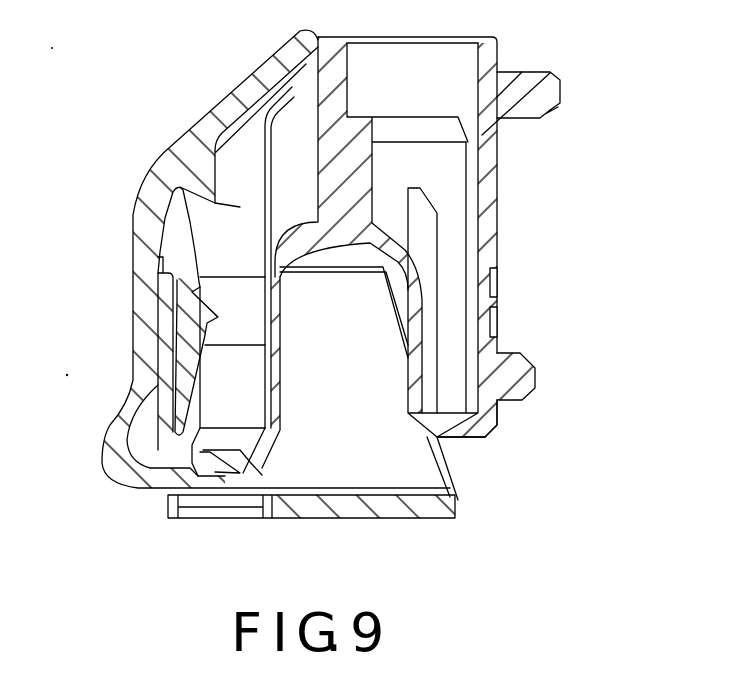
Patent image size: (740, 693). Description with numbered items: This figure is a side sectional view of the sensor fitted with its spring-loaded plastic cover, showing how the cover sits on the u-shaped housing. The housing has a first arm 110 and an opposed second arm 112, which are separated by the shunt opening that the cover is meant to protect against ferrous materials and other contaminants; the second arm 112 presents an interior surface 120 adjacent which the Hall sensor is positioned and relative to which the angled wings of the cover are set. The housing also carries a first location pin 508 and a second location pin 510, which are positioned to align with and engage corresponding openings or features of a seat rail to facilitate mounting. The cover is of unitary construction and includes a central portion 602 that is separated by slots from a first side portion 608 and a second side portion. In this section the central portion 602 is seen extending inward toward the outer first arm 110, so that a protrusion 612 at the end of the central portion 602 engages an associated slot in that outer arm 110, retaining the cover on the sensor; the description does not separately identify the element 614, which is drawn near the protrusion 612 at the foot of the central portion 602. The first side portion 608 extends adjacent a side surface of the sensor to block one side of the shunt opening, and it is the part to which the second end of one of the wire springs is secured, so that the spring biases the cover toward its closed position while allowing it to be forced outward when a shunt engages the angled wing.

The first location pin 508 is at (555, 80).
The central portion 602 is at (137, 345).
The interior surface 120 is at (407, 355).
The first arm 110 is at (273, 417).
The second location pin 510 is at (532, 363).
The second arm 112 is at (503, 418).
The first side portion 608 is at (458, 502).
The protrusion 612 is at (203, 467).
The seal 614 is at (227, 450).